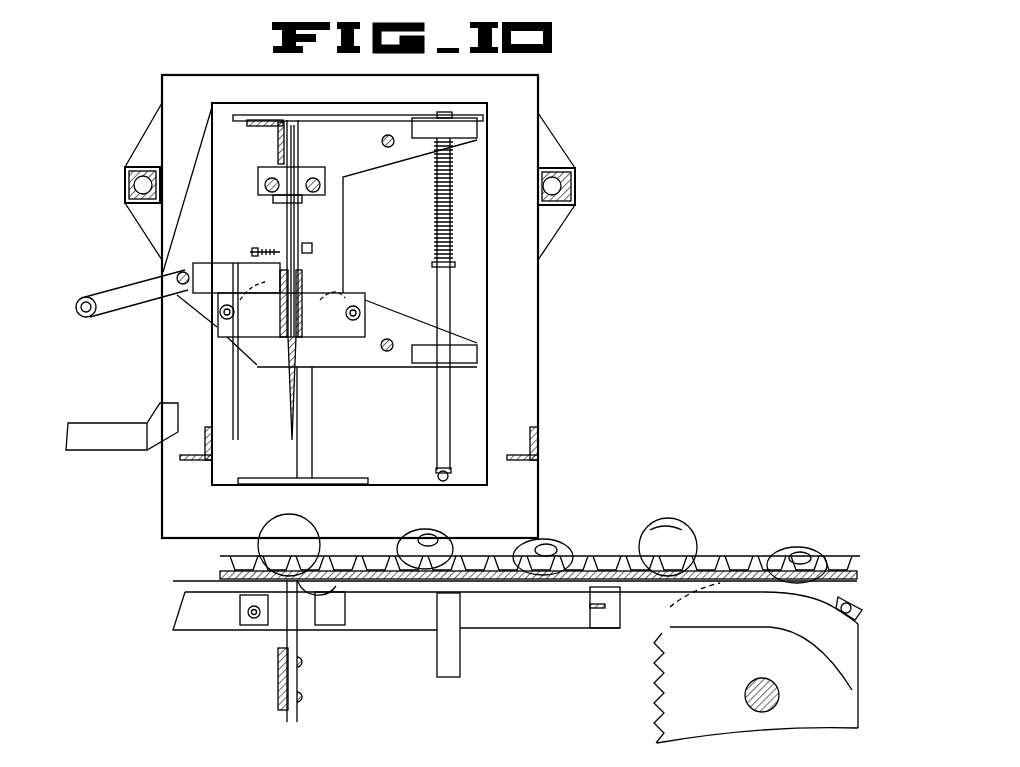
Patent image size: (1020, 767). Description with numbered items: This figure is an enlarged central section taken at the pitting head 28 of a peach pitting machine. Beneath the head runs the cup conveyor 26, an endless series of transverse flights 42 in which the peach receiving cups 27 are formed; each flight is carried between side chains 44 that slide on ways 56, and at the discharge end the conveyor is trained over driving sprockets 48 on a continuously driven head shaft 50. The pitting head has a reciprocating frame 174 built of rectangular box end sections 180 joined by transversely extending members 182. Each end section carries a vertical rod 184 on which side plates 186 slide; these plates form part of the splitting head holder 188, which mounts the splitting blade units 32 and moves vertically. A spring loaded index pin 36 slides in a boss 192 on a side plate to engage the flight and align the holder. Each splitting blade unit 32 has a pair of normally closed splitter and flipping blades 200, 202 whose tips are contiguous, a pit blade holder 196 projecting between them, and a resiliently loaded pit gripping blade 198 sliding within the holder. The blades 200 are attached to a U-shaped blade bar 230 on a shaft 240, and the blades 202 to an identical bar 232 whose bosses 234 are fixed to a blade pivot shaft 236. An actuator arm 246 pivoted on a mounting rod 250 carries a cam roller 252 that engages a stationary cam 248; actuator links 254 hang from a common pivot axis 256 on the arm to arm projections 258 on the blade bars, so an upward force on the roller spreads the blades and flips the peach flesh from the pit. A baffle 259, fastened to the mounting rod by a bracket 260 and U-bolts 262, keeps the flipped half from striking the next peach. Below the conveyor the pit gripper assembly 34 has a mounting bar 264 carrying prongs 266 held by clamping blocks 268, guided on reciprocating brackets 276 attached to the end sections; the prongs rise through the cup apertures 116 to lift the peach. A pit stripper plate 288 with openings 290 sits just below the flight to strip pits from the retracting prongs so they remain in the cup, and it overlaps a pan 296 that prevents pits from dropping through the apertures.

The cup conveyor 26 is at (632, 550).
The peach receiving cup 27 is at (322, 548).
The pitting head 28 is at (556, 274).
The splitting blade unit 32 is at (300, 391).
The pit gripper assembly 34 is at (283, 637).
The index pin 36 is at (437, 457).
The conveyor flight 42 is at (232, 557).
The conveyor side chain 44 is at (220, 571).
The driving sprocket 48 is at (648, 697).
The head shaft 50 is at (770, 712).
The way 56 is at (195, 586).
The cup aperture 116 is at (318, 588).
The reciprocating frame 174 is at (538, 312).
The rectangular box end section 180 is at (530, 363).
The transversely extending member 182 is at (125, 185).
The vertical rod 184 is at (305, 450).
The side plate 186 is at (195, 215).
The splitting head holder 188 is at (242, 152).
The boss 192 is at (468, 120).
The pit blade holder 196 is at (300, 221).
The pit gripping blade 198 is at (270, 388).
The splitter and flipping blade 200 is at (292, 423).
The splitter and flipping blade 202 is at (302, 414).
The blade bar 230 is at (288, 222).
The blade bar 232 is at (303, 275).
The boss 234 is at (320, 166).
The blade pivot shaft 236 is at (322, 188).
The shaft 240 is at (264, 188).
The actuator arm 246 is at (95, 290).
The stationary cam 248 is at (162, 410).
The mounting rod 250 is at (177, 295).
The cam roller 252 is at (85, 310).
The actuator link 254 is at (322, 291).
The common pivot axis 256 is at (322, 242).
The arm projection 258 is at (330, 340).
The baffle 259 is at (228, 394).
The bracket 260 is at (215, 272).
The U-bolt 262 is at (170, 270).
The mounting bar 264 is at (305, 688).
The prong 266 is at (293, 608).
The clamping block 268 is at (278, 683).
The reciprocating bracket 276 is at (345, 616).
The pit stripper plate 288 is at (246, 565).
The opening 290 is at (285, 525).
The pan 296 is at (493, 587).